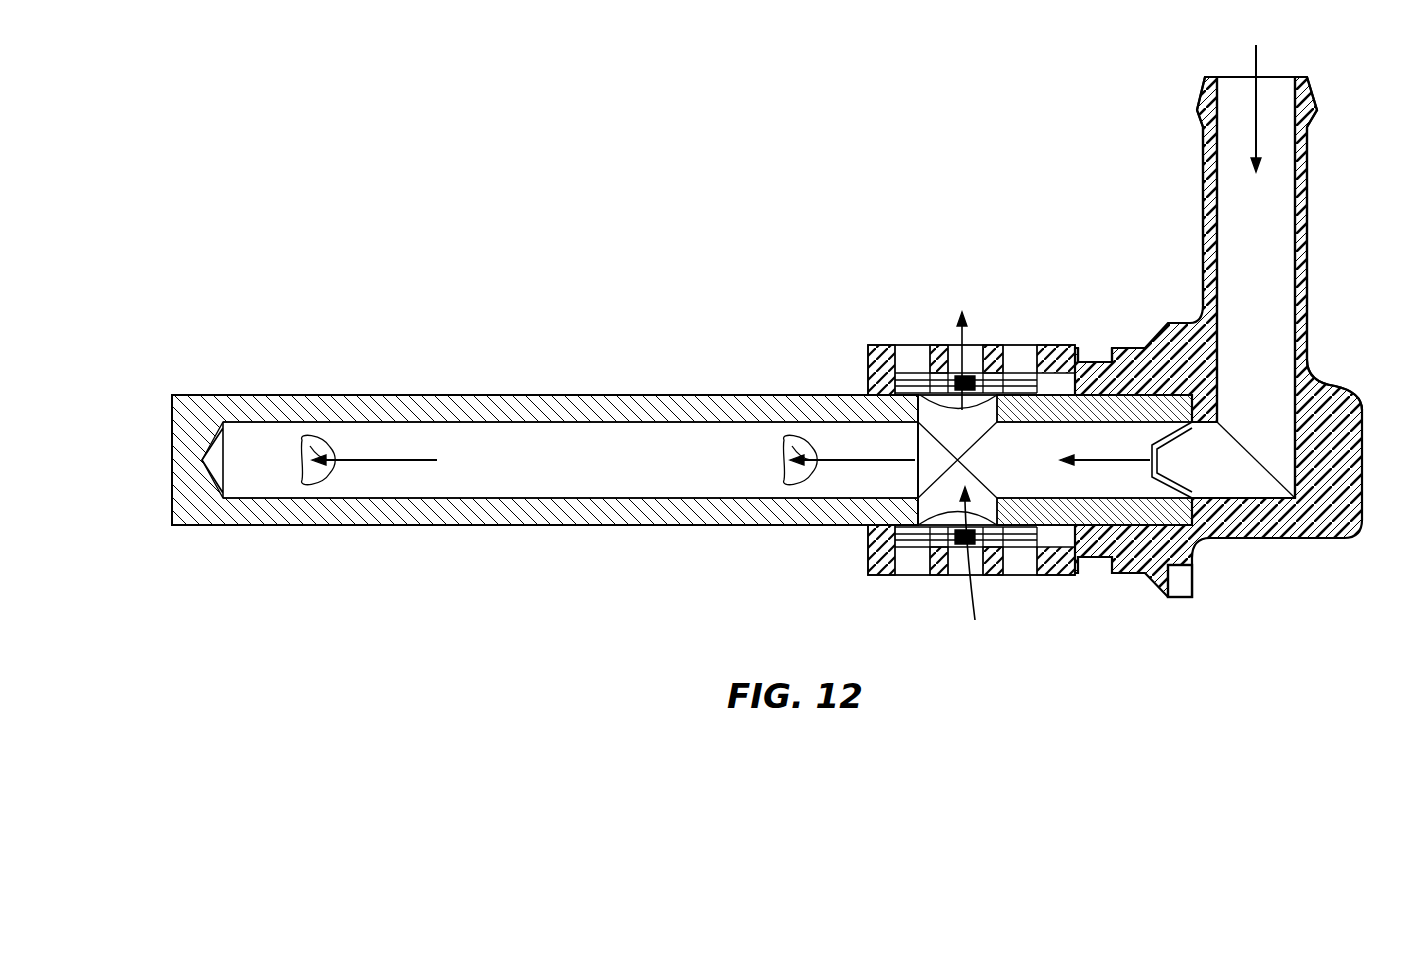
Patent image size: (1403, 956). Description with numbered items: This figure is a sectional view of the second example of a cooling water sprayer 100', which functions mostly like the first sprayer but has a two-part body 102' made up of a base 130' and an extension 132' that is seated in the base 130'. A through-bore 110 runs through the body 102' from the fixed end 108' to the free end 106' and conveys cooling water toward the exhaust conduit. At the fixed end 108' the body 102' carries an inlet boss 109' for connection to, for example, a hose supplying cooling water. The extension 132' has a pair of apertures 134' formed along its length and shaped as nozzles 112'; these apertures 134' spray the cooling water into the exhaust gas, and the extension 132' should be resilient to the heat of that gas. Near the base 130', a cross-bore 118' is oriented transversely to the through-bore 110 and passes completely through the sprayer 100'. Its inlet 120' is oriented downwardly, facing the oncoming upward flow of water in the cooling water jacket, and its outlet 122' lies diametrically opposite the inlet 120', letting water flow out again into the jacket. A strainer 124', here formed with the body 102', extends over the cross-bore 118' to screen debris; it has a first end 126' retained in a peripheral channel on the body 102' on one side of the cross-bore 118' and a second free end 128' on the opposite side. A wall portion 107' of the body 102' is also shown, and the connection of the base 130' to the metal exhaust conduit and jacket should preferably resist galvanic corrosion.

The cooling water sprayer 100' is at (767, 337).
The body 102' is at (1224, 619).
The free end 106' is at (135, 428).
The housing upper portion 107' is at (1105, 309).
The fixed end 108' is at (1221, 346).
The inlet boss 109' is at (1294, 262).
The through-bore 110 is at (611, 473).
The nozzle 112' is at (568, 404).
The cross-bore 118' is at (1055, 438).
The inlet 120' is at (1007, 508).
The outlet 122' is at (929, 440).
The strainer 124' is at (936, 579).
The first end 126' is at (1075, 599).
The second free end 128' is at (916, 465).
The base 130' is at (1355, 366).
The extension 132' is at (545, 503).
The apertures 134' is at (533, 464).